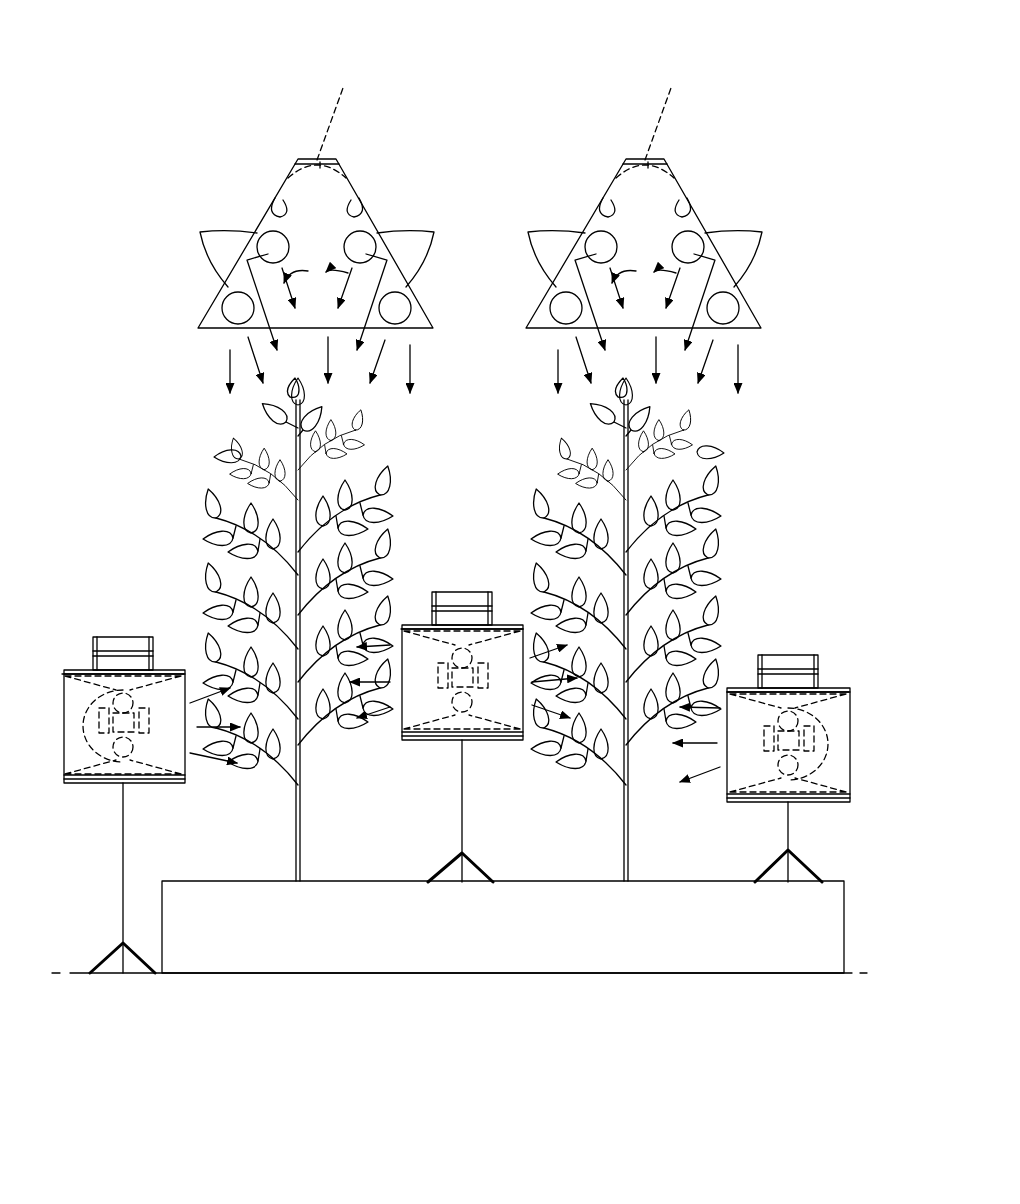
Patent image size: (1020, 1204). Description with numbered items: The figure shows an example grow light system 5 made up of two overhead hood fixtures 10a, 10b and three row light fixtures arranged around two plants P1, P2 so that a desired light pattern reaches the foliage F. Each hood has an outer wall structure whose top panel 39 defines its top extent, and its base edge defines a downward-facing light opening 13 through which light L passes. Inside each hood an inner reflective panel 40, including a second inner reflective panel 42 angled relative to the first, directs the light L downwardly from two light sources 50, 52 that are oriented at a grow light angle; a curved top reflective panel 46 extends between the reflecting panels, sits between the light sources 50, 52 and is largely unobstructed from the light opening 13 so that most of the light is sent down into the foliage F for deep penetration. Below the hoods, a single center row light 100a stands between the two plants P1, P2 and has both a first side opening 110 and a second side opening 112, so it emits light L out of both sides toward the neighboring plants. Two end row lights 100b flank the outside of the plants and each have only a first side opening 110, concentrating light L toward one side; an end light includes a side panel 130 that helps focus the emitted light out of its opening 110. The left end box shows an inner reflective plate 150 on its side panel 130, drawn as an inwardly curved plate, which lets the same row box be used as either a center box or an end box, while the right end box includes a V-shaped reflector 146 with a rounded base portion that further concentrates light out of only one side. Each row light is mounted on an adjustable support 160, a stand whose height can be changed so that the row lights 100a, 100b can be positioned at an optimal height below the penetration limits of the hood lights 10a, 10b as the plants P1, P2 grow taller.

The grow light system 5 is at (222, 80).
The light hood fixture 10a is at (373, 142).
The light hood fixture 10b is at (701, 142).
The light opening 13 is at (295, 332).
The top panel 39 is at (306, 157).
The inner reflective panel 40 is at (272, 201).
The second inner reflective panel 42 is at (362, 201).
The curved top reflective panel 46 is at (500, 112).
The light source 50 is at (375, 252).
The light source 52 is at (583, 252).
The plant P1 is at (402, 476).
The plant P2 is at (536, 476).
The foliage F is at (238, 457).
The light L is at (700, 748).
The center row light 100a is at (472, 574).
The end row light 100b is at (133, 624).
The first side opening 110 is at (186, 758).
The second side opening 112 is at (533, 745).
The side panel 130 is at (64, 763).
The V-shaped reflector 146 is at (852, 697).
The inner reflective plate 150 is at (64, 697).
The adjustable support 160 is at (127, 848).